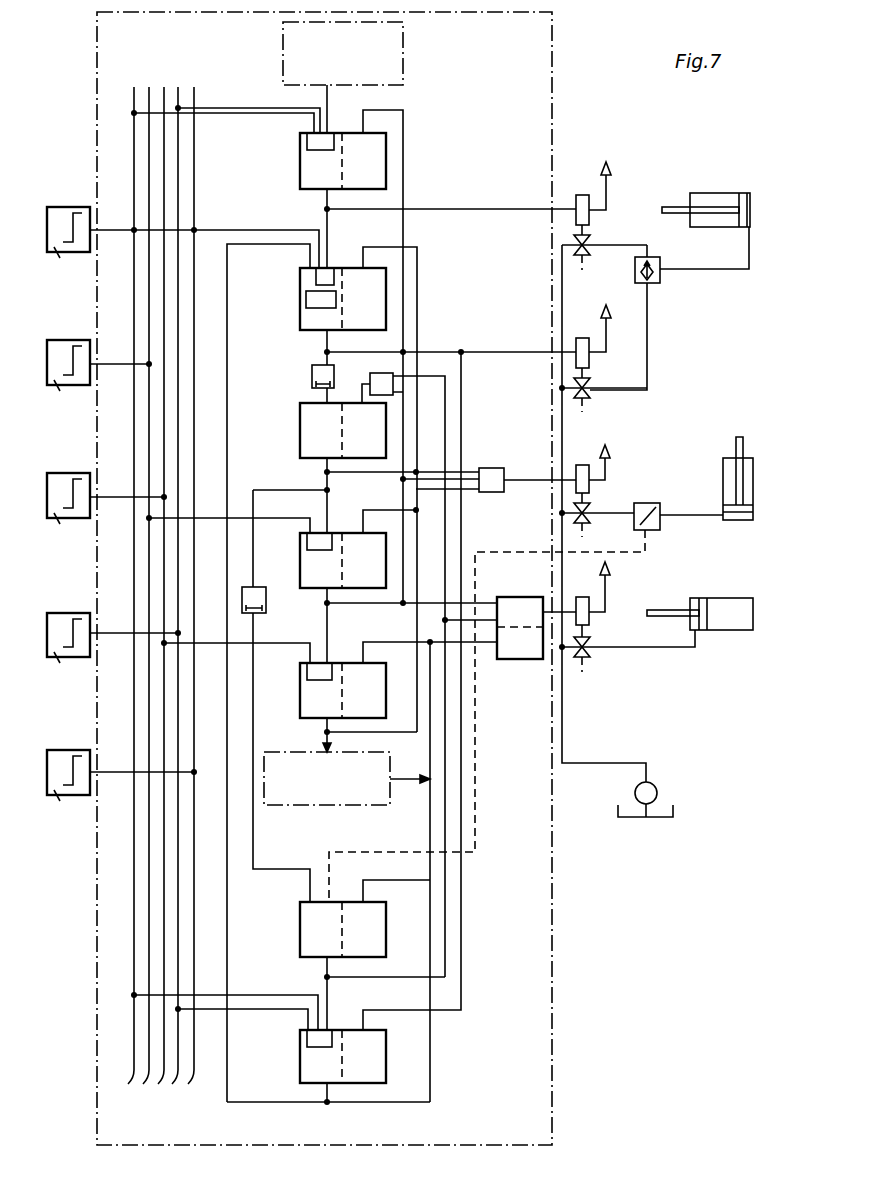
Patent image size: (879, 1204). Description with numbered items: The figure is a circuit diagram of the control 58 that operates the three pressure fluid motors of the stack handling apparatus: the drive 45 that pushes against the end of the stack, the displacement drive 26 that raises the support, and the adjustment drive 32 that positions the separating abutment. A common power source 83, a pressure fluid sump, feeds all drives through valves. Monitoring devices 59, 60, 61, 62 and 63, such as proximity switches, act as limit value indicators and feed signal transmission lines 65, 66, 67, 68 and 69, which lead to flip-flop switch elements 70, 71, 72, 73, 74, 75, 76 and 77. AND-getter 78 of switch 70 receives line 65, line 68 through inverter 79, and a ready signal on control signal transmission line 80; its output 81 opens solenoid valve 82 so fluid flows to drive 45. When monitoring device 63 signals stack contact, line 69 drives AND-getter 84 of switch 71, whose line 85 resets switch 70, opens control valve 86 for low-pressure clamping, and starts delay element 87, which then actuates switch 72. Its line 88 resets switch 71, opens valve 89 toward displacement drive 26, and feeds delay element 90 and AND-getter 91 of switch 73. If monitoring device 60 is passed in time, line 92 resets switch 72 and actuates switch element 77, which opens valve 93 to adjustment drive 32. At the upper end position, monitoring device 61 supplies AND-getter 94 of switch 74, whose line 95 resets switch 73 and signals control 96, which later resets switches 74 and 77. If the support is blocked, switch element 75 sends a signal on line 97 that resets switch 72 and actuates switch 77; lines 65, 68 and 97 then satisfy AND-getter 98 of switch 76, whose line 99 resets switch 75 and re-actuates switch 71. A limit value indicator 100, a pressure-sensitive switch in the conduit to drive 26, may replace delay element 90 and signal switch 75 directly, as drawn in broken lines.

The displacement drive 26 is at (753, 500).
The adjustment drive 32 is at (753, 613).
The drive 45 is at (740, 199).
The control 58 is at (563, 128).
The monitoring device 59 is at (120, 248).
The monitoring device 60 is at (98, 381).
The monitoring device 61 is at (105, 514).
The monitoring device 62 is at (112, 653).
The monitoring device 63 is at (120, 792).
The control signal transmission line 65 is at (120, 603).
The signal transmission line 66 is at (135, 615).
The signal transmission line 67 is at (152, 603).
The signal transmission line 68 is at (168, 615).
The signal transmission line 69 is at (186, 603).
The switch element 70 is at (268, 355).
The switch element 71 is at (305, 481).
The switch element 72 is at (314, 431).
The switch element 73 is at (310, 560).
The switch element 74 is at (310, 690).
The switch element 75 is at (318, 935).
The switch element 76 is at (310, 1058).
The switch element 77 is at (509, 629).
The AND-getter 78 is at (307, 142).
The inverter 79 is at (330, 130).
The control signal transmission line 80 is at (327, 99).
The output 81 is at (327, 201).
The solenoid valve 82 is at (590, 232).
The common power source 83 is at (636, 789).
The AND-getter 84 is at (316, 277).
The line 85 is at (327, 342).
The control valve 86 is at (590, 375).
The delay element 87 is at (312, 378).
The signal transmission line 88 is at (327, 465).
The valve 89 is at (590, 497).
The delay element 90 is at (266, 598).
The AND-getter 91 is at (307, 541).
The signal transmission line 92 is at (323, 596).
The valve 93 is at (590, 632).
The AND-getter 94 is at (307, 671).
The line 95 is at (327, 732).
The control 96 is at (347, 778).
The line 97 is at (327, 967).
The AND-getter 98 is at (307, 1036).
The line 99 is at (343, 1105).
The limit value indicator 100 is at (636, 525).